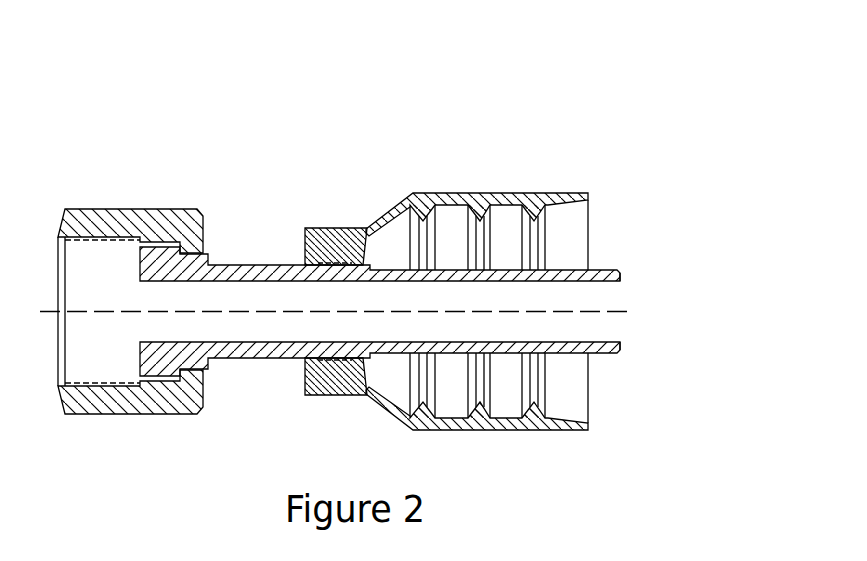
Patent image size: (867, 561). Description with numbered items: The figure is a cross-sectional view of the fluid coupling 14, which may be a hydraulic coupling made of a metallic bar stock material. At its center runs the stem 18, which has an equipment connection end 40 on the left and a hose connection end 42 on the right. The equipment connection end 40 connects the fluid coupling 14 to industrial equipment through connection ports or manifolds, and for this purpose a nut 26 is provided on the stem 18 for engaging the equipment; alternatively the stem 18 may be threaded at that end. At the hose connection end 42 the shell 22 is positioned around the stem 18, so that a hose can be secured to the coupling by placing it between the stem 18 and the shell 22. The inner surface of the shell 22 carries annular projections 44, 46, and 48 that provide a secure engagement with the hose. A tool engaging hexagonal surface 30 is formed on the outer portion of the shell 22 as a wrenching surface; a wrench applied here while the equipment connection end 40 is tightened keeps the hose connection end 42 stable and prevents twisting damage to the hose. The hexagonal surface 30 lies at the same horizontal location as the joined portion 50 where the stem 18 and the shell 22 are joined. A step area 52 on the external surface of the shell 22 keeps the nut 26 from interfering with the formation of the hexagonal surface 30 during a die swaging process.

The fluid coupling 14 is at (614, 92).
The equipment connection end 40 is at (92, 130).
The hose connection end 42 is at (569, 134).
The nut 26 is at (156, 209).
The stem 18 is at (263, 265).
The step area 52 is at (307, 228).
The tool engaging hexagonal surface 30 is at (341, 228).
The shell 22 is at (466, 193).
The annular projection 44 is at (422, 193).
The annular projection 46 is at (478, 193).
The annular projection 48 is at (533, 193).
The joined portion 50 is at (318, 348).